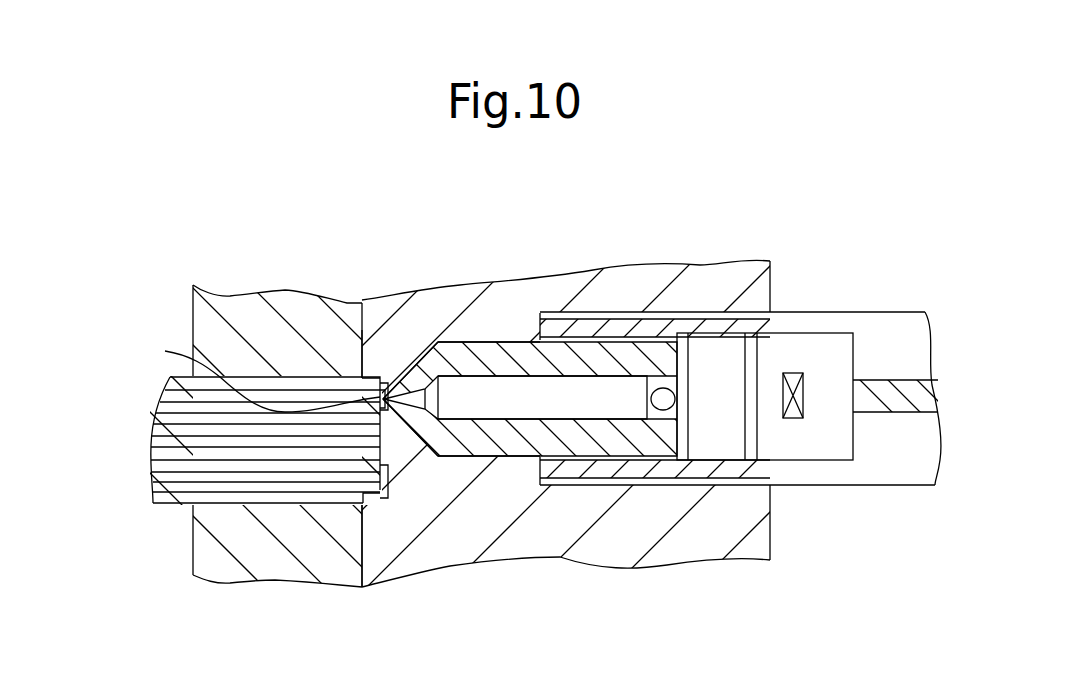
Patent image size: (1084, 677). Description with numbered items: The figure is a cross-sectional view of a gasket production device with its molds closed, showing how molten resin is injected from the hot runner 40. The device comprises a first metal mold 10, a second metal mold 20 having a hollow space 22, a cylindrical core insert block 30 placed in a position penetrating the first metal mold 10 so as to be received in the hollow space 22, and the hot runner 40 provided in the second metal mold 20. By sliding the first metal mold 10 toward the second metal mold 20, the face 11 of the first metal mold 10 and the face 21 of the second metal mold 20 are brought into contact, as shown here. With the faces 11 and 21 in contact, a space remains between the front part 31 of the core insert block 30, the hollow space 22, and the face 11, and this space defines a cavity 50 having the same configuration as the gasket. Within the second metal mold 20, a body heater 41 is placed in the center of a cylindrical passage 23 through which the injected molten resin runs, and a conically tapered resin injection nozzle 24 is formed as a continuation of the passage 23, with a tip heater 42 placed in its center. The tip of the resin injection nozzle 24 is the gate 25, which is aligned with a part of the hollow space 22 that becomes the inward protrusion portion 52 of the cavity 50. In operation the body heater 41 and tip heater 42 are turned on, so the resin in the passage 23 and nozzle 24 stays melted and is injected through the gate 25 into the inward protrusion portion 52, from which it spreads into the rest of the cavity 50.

The first metal mold 10 is at (278, 298).
The face of the first metal mold 11 is at (362, 337).
The second metal mold 20 is at (622, 252).
The face of the second metal mold 21 is at (364, 318).
The hollow space 22 is at (375, 460).
The cylindrical passage 23 is at (482, 330).
The resin injection nozzle 24 is at (428, 340).
The gate 25 is at (256, 374).
The core insert block 30 is at (183, 430).
The front part of the core insert block 31 is at (380, 446).
The hot runner 40 is at (513, 330).
The body heater 41 is at (525, 403).
The tip heater 42 is at (415, 457).
The cavity 50 is at (360, 563).
The inward protrusion portion 52 is at (378, 394).